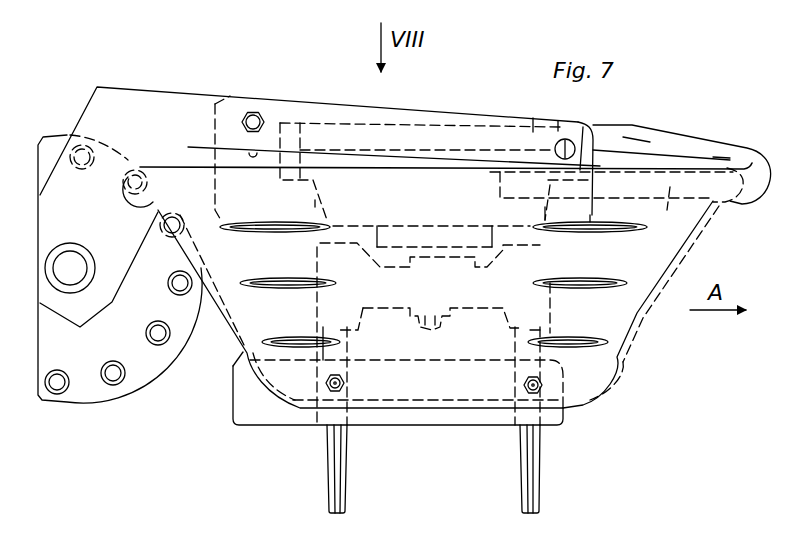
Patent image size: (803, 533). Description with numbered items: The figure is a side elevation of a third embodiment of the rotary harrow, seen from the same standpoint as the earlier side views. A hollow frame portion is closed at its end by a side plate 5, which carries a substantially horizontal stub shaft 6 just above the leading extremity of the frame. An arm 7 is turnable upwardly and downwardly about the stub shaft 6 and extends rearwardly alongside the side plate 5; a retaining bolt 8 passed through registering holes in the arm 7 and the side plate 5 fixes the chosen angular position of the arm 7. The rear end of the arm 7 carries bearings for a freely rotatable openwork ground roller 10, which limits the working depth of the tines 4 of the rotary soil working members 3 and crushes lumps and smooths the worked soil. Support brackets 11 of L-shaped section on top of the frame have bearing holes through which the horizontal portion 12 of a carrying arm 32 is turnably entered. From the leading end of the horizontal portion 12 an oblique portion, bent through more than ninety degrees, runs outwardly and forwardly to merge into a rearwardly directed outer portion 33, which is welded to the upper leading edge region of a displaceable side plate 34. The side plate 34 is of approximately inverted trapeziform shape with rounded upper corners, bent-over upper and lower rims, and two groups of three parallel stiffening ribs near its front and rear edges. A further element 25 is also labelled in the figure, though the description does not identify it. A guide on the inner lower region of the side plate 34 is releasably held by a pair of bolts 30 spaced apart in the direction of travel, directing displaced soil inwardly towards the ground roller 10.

The rotary soil working member 3 is at (548, 462).
The tines 4 is at (326, 478).
The side plate 5 is at (260, 236).
The stub shaft 6 is at (568, 139).
The arm 7 is at (151, 96).
The retaining bolt 8 is at (256, 111).
The ground roller 10 is at (126, 396).
The support bracket 11 is at (300, 120).
The horizontal portion 12 is at (443, 125).
The base plate 25 is at (440, 418).
The bolts 30 is at (345, 382).
The carrying arm 32 is at (695, 112).
The outer portion 33 is at (615, 240).
The displaceable side plate 34 is at (640, 328).